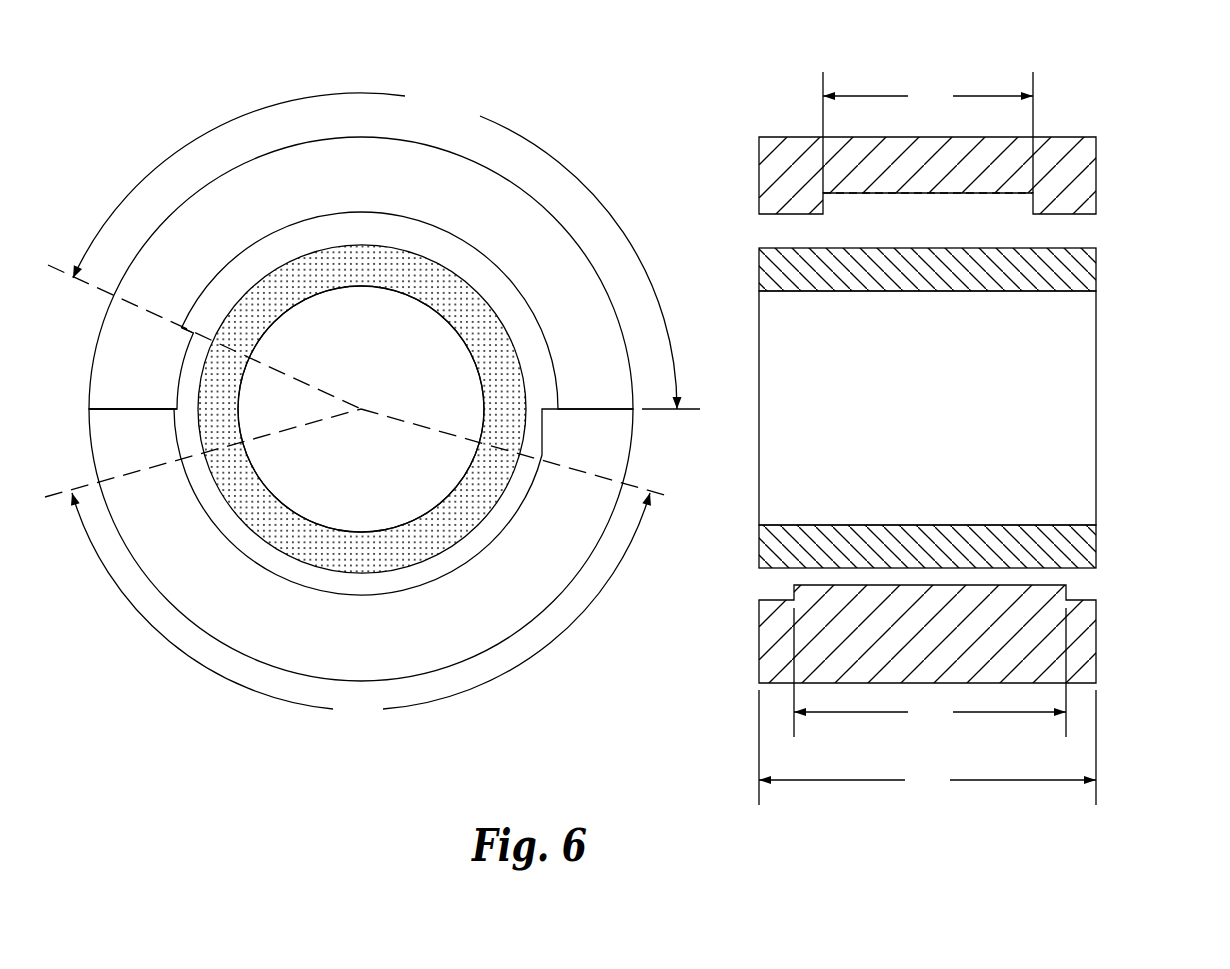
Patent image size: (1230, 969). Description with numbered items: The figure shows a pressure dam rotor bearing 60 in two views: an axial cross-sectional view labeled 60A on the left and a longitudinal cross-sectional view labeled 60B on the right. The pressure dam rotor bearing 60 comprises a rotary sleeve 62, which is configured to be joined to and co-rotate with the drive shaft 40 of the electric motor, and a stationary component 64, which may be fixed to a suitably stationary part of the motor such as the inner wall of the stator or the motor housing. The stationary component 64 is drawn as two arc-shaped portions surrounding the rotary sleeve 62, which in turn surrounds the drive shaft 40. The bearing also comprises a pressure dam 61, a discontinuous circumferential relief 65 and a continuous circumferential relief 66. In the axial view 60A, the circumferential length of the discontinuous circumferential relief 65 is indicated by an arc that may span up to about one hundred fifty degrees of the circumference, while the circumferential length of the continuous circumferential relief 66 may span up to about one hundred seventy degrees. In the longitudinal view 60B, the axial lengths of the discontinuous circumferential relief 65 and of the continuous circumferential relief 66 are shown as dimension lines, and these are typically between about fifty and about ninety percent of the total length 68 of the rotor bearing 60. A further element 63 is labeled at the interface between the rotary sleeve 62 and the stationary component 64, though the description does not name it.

The pressure dam rotor bearing 60 is at (662, 81).
The axial cross-sectional view sub-figure 60A is at (190, 718).
The longitudinal cross-sectional view sub-figure 60B is at (1133, 752).
The drive shaft 40 is at (363, 462).
The pressure dam 61 is at (193, 332).
The rotary sleeve 62 is at (368, 274).
The interface gap 63 is at (188, 392).
The stationary component 64 is at (583, 412).
The discontinuous circumferential relief 65 is at (597, 182).
The continuous circumferential relief 66 is at (583, 581).
The total length of the rotor bearing 68 is at (927, 748).